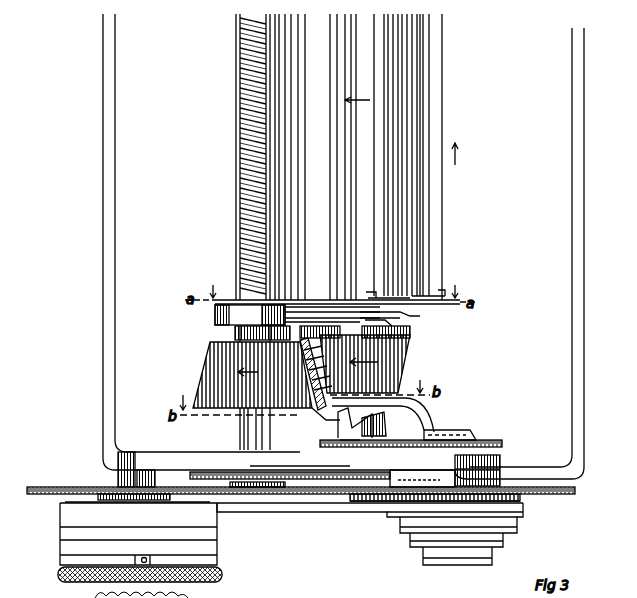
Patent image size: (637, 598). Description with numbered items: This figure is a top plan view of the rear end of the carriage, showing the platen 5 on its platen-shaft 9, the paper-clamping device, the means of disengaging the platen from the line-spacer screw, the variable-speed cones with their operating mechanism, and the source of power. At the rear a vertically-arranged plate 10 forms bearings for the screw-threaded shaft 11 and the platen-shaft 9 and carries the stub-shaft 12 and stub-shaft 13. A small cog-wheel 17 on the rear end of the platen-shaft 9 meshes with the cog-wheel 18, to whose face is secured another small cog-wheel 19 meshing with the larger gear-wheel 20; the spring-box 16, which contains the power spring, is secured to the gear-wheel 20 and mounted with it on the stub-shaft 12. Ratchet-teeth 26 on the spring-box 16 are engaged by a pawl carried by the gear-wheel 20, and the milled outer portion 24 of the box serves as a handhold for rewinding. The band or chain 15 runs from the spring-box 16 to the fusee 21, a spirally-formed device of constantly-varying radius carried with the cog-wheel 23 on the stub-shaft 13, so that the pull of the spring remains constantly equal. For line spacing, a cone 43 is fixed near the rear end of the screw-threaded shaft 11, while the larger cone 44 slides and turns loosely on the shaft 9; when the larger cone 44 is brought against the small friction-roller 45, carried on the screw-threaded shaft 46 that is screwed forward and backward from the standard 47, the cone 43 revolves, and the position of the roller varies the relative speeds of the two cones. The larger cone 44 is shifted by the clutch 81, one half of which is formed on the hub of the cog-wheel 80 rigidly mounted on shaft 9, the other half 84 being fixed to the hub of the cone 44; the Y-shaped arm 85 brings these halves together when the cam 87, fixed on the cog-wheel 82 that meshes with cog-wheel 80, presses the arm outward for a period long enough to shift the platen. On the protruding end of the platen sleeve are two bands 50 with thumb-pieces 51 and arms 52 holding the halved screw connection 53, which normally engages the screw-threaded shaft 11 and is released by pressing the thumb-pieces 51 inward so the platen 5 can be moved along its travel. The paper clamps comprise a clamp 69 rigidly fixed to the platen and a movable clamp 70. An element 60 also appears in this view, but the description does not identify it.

The platen 5 is at (322, 157).
The platen-shaft 9 is at (340, 330).
The vertically-arranged plate 10 is at (286, 472).
The screw-threaded shaft 11 is at (236, 216).
The stub-shaft 12 is at (118, 474).
The stub-shaft 13 is at (452, 472).
The band or chain 15 is at (296, 505).
The spring-box 16 is at (70, 573).
The small cog-wheel 17 is at (390, 472).
The cog-wheel 18 is at (292, 484).
The small cog-wheel 19 is at (288, 489).
The larger gear-wheel 20 is at (301, 482).
The fusee 21 is at (505, 542).
The cog-wheel 23 is at (521, 495).
The outer portion of the spring-box 24 is at (60, 582).
The ratchet-teeth 26 is at (98, 497).
The cone 43 is at (205, 372).
The larger cone 44 is at (402, 359).
The small friction-roller 45 is at (310, 417).
The screw-threaded shaft 46 is at (320, 410).
The standard 47 is at (236, 333).
The bands 50 is at (388, 312).
The thumb-pieces 51 is at (382, 322).
The arms 52 is at (298, 330).
The screw connection 53 is at (230, 318).
The gear 60 is at (330, 596).
The clamp 69 is at (383, 156).
The clamp 70 is at (440, 267).
The cog-wheel 80 is at (345, 446).
The clutch 81 is at (376, 430).
The cog-wheel 82 is at (500, 442).
The clutch half 84 is at (378, 420).
The Y-shaped arm 85 is at (426, 414).
The cam 87 is at (468, 430).